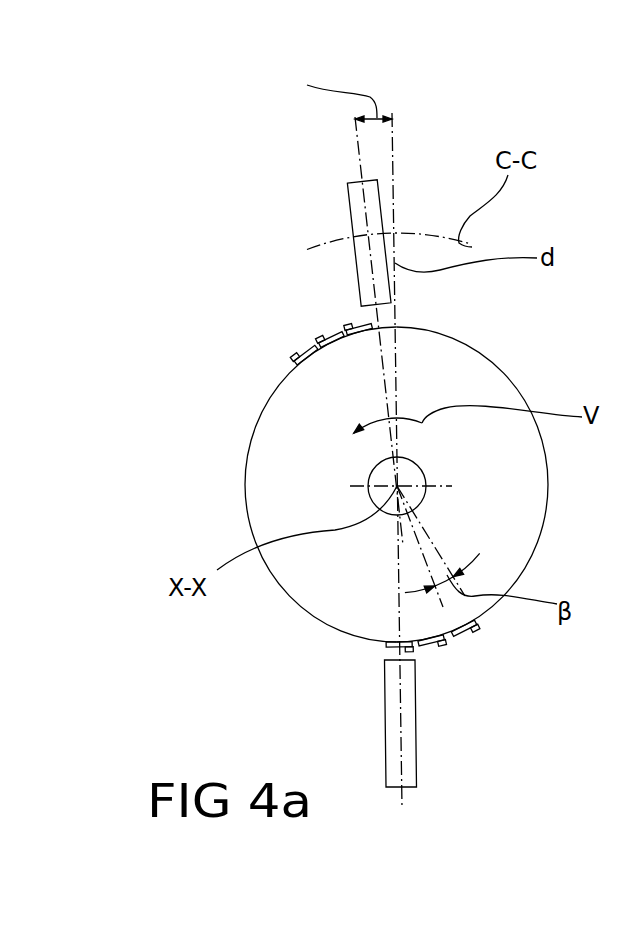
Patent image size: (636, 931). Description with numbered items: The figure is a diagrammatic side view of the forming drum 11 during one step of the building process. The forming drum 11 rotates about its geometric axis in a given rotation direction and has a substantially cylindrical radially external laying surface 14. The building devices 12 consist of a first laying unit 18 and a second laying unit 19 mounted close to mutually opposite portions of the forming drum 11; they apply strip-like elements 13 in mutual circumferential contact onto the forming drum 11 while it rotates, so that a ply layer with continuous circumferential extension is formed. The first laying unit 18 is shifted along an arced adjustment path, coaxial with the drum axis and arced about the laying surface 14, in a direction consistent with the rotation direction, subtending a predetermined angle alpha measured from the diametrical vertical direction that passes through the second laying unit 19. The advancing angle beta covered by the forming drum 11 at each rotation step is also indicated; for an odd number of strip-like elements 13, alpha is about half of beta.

The forming drum 11 is at (240, 438).
The building devices 12 is at (343, 169).
The strip-like elements 13 is at (365, 323).
The radially external laying surface 14 is at (502, 372).
The first laying unit 18 is at (339, 200).
The second laying unit 19 is at (428, 762).